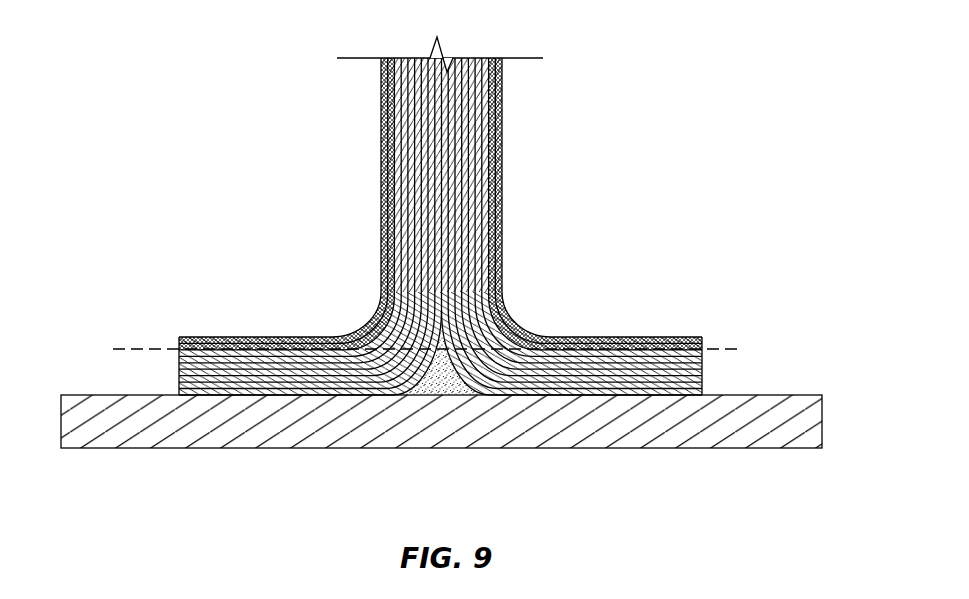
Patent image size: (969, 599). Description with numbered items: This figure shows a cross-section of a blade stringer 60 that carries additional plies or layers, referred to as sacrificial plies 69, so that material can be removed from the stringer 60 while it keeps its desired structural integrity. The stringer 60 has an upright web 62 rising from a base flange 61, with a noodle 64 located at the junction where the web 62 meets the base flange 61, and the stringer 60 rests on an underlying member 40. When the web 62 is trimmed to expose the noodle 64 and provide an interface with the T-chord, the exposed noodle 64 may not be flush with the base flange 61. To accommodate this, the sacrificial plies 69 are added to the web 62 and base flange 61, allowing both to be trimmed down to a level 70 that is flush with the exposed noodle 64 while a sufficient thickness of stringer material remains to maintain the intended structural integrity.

The blade stringer 60 is at (470, 259).
The web 62 is at (421, 157).
The base flange 61 is at (178, 388).
The sacrificial plies 69 is at (392, 222).
The noodle 64 is at (440, 380).
The level 70 is at (145, 349).
The skin / base panel 40 is at (290, 450).